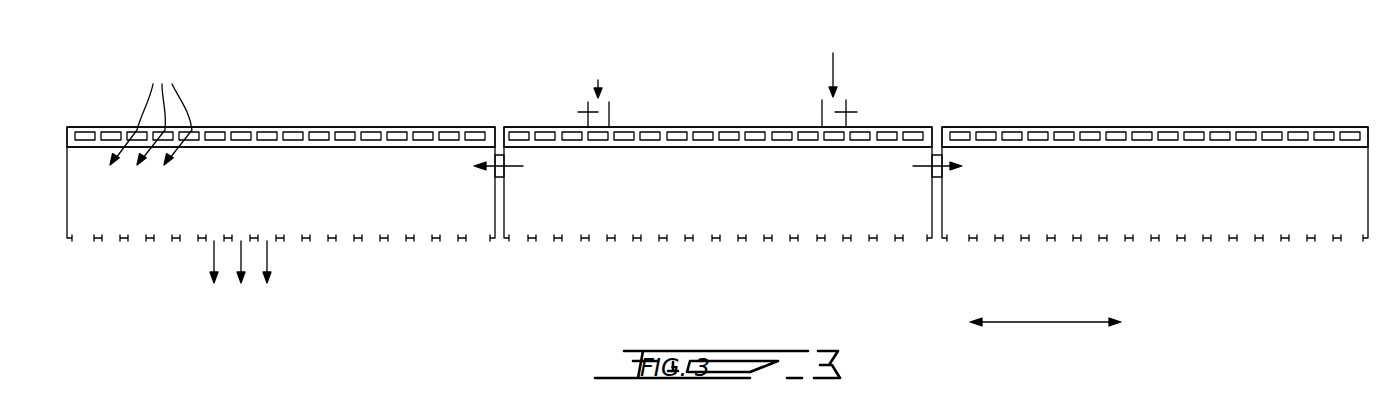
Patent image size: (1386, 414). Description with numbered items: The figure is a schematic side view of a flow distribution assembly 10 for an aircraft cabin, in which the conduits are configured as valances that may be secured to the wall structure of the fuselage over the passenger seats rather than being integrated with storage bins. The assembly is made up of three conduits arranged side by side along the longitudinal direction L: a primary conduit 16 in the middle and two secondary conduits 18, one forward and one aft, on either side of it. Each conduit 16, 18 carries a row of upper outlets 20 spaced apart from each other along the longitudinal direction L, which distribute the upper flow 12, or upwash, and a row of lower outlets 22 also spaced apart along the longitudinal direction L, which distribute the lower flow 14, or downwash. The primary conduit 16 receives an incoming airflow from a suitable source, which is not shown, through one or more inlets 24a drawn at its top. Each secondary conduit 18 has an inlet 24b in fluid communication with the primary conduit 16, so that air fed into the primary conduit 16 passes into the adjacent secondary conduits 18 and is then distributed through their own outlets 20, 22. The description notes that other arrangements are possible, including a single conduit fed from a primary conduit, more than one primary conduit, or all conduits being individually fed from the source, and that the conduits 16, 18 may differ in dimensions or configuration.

The flow distribution assembly 10 is at (1128, 105).
The upper flow 12 is at (151, 112).
The lower flow 14 is at (268, 255).
The primary conduit 16 is at (689, 117).
The secondary conduit 18 is at (409, 118).
The upper outlets 20 is at (262, 131).
The lower outlets 22 is at (110, 241).
The inlet 24a is at (580, 112).
The inlet 24b is at (504, 170).
The longitudinal direction L is at (1045, 323).